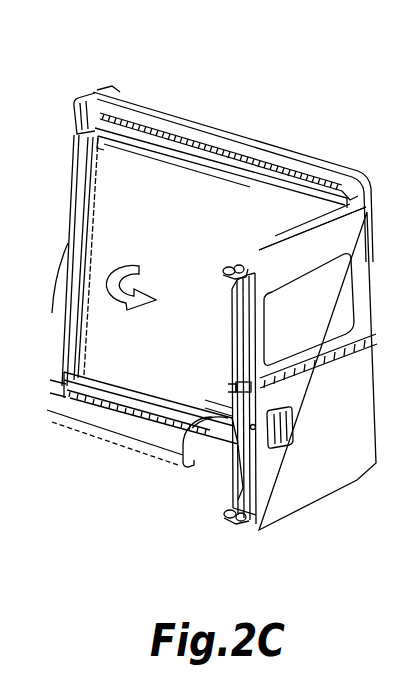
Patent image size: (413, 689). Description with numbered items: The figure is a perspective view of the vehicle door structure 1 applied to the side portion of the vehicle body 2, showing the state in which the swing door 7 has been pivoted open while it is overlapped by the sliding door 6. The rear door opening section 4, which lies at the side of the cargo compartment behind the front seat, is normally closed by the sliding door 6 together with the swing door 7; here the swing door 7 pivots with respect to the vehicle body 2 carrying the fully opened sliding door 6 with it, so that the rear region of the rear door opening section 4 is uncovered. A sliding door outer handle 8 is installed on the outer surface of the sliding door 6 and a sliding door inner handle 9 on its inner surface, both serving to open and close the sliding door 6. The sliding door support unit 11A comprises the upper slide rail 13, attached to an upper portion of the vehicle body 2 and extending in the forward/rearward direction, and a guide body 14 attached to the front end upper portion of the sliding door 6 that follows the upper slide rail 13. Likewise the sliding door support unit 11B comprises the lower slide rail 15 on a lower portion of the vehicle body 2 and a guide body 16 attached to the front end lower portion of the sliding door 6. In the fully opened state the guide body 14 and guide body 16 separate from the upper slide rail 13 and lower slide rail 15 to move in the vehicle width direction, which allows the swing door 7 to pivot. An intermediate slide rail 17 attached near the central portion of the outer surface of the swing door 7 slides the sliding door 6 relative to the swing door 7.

The vehicle door structure 1 is at (300, 221).
The vehicle body 2 is at (328, 173).
The rear door opening section 4 is at (100, 215).
The sliding door 6 is at (357, 238).
The swing door 7 is at (237, 327).
The sliding door outer handle 8 is at (288, 424).
The sliding door inner handle 9 is at (230, 396).
The sliding door support unit 11A is at (220, 150).
The sliding door support unit 11B is at (165, 421).
The upper slide rail 13 is at (152, 150).
The guide body 14 is at (227, 267).
The lower slide rail 15 is at (112, 388).
The guide body 16 is at (228, 510).
The intermediate slide rail 17 is at (235, 362).